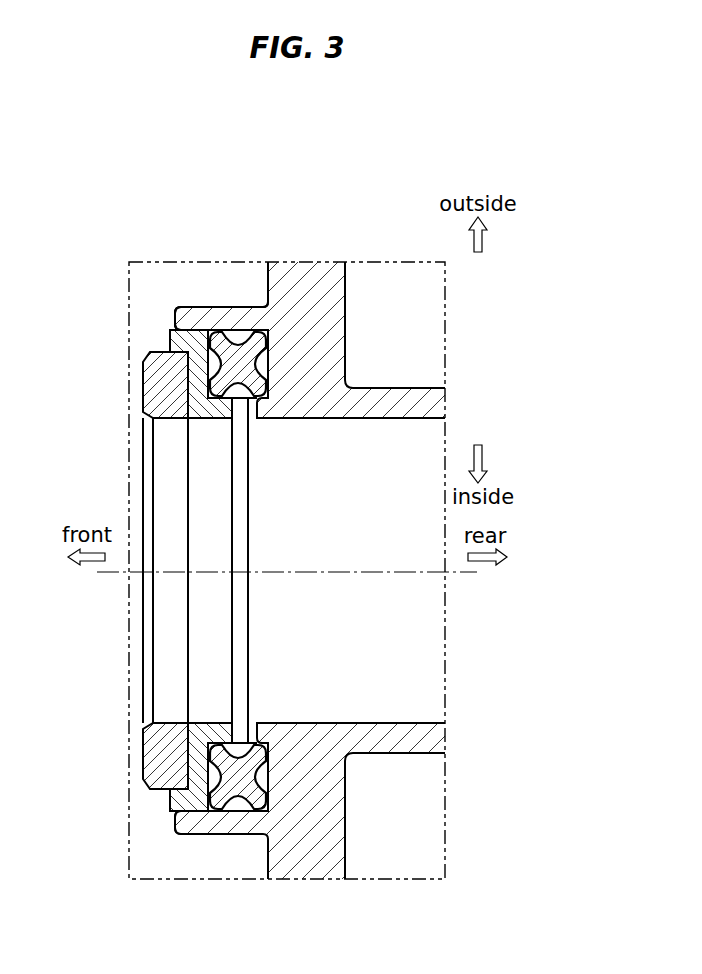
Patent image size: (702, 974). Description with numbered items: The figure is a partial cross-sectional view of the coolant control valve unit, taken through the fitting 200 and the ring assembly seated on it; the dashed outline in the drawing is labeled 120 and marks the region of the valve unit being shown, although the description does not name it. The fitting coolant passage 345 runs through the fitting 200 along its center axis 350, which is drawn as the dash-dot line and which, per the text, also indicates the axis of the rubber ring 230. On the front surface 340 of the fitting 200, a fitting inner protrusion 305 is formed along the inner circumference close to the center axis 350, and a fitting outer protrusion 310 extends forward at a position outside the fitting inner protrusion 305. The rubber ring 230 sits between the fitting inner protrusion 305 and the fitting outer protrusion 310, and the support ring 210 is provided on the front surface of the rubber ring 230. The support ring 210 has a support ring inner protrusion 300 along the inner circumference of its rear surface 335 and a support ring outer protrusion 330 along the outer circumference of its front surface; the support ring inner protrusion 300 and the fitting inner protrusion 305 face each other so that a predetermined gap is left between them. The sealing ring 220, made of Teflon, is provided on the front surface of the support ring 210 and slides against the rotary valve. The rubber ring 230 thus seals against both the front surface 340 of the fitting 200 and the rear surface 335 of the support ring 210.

The sensor unit 120 is at (339, 228).
The fitting 200 is at (330, 306).
The support ring 210 is at (200, 370).
The sealing ring 220 is at (160, 395).
The rubber ring 230 is at (238, 354).
The support ring inner protrusion 300 is at (222, 420).
The fitting inner protrusion 305 is at (258, 412).
The fitting outer protrusion 310 is at (198, 316).
The support ring outer protrusion 330 is at (172, 338).
The rear surface of the support ring 335 is at (206, 774).
The front surface of the fitting 340 is at (270, 768).
The fitting coolant passage 345 is at (416, 660).
The center axis 350 is at (458, 573).